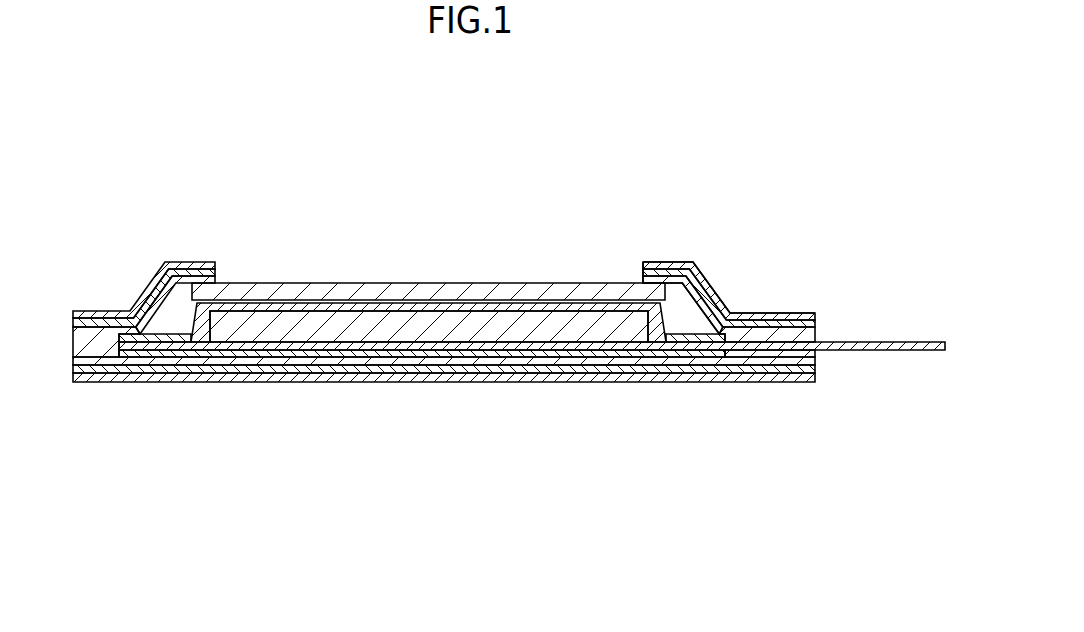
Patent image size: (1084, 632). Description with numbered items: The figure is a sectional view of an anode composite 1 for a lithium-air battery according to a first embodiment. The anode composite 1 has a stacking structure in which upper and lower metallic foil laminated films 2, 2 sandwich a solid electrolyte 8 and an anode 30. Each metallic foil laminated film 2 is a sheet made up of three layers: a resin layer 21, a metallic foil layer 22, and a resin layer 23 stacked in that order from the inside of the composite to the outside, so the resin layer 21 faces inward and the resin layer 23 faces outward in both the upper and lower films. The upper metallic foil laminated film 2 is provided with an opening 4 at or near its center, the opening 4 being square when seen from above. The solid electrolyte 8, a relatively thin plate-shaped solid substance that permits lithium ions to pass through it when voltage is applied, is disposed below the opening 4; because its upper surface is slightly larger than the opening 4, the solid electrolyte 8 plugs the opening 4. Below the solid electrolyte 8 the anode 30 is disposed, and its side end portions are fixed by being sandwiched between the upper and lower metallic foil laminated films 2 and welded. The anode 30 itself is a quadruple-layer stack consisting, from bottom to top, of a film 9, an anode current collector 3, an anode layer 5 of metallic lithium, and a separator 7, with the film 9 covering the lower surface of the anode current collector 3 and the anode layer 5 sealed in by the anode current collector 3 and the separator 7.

The anode composite 1 is at (735, 208).
The metallic foil laminated film 2 is at (52, 147).
The resin layer 21 is at (78, 335).
The metallic foil layer 22 is at (186, 276).
The resin layer 23 is at (217, 264).
The anode 30 is at (353, 175).
The anode current collector 3 is at (523, 350).
The anode layer 5 is at (357, 322).
The separator 7 is at (407, 310).
The film 9 is at (477, 343).
The solid electrolyte 8 is at (580, 292).
The opening 4 is at (645, 277).